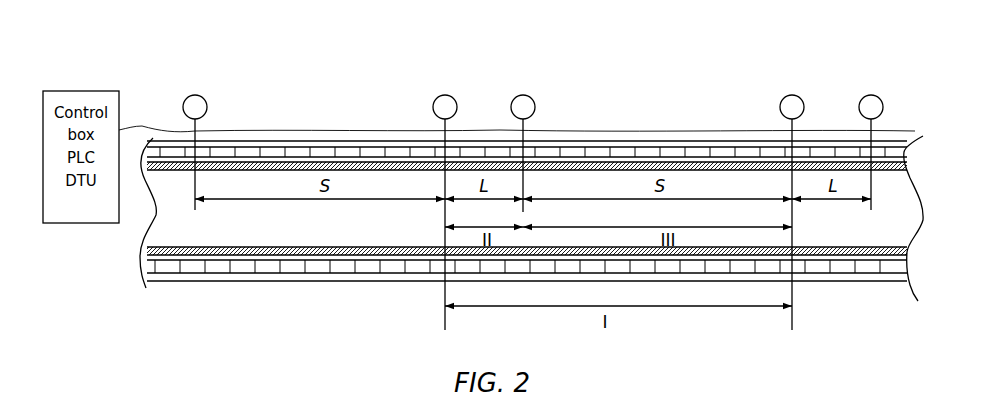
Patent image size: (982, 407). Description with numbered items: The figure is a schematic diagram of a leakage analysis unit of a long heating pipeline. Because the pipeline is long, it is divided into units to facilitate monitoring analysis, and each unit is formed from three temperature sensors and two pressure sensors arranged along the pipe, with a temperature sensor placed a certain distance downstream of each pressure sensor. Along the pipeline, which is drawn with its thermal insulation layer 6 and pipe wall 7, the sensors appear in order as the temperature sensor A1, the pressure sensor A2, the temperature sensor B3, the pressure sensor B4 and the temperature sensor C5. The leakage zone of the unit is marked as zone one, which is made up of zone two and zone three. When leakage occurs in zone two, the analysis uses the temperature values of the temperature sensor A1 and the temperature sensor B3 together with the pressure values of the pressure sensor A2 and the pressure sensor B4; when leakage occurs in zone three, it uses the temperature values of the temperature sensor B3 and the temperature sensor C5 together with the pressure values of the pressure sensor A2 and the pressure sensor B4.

The temperature sensor A A1 is at (201, 94).
The pressure sensor A A2 is at (451, 94).
The temperature sensor B B3 is at (529, 94).
The pressure sensor B B4 is at (798, 94).
The temperature sensor C C5 is at (877, 94).
The thermal insulation layer 6 is at (906, 153).
The pipe wall 7 is at (904, 167).